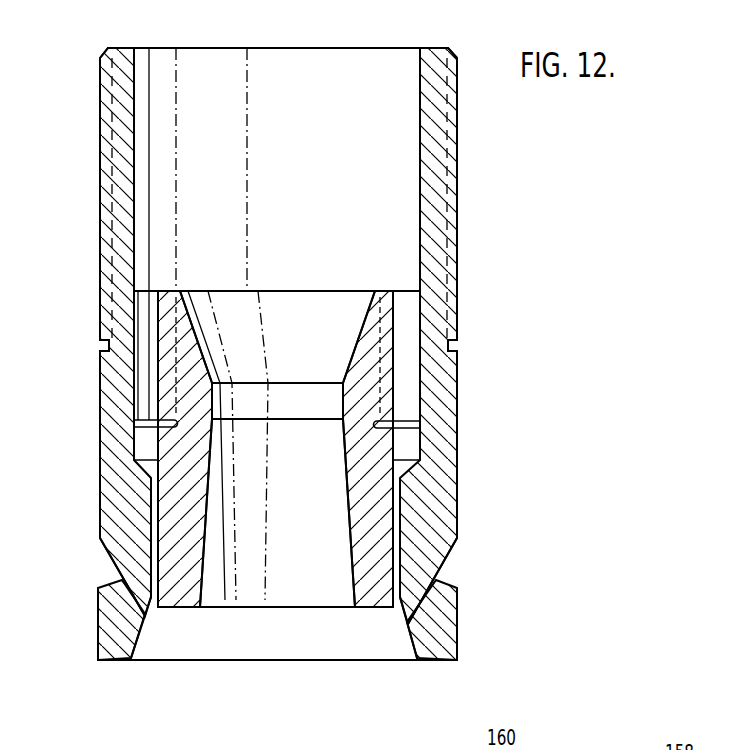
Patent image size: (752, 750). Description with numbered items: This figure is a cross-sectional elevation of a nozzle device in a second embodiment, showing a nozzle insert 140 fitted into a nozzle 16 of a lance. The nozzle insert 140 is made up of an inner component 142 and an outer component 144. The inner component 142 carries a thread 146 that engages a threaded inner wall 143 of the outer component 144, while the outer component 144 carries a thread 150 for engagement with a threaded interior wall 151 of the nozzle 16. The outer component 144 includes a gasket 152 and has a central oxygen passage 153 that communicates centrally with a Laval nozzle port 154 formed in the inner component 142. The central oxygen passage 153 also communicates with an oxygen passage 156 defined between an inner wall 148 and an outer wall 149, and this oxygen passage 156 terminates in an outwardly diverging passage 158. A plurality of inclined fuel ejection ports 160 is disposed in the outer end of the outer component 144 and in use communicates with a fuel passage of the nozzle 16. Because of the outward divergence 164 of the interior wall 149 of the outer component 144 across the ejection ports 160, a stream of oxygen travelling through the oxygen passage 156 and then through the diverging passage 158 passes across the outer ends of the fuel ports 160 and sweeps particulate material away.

The nozzle 16 is at (461, 175).
The nozzle insert 140 is at (461, 522).
The inner component 142 is at (385, 418).
The threaded inner wall 143 is at (375, 352).
The outer component 144 is at (452, 460).
The thread 146 is at (388, 388).
The inner wall 148 is at (152, 298).
The outer wall 149 is at (138, 343).
The thread 150 is at (444, 268).
The threaded interior wall 151 is at (450, 222).
The gasket 152 is at (436, 48).
The central oxygen passage 153 is at (138, 160).
The Laval nozzle port 154 is at (212, 612).
The oxygen passage 156 is at (137, 383).
The outwardly diverging passage 158 is at (148, 590).
The inclined fuel ejection ports 160 is at (106, 585).
The outward divergence 164 is at (157, 661).